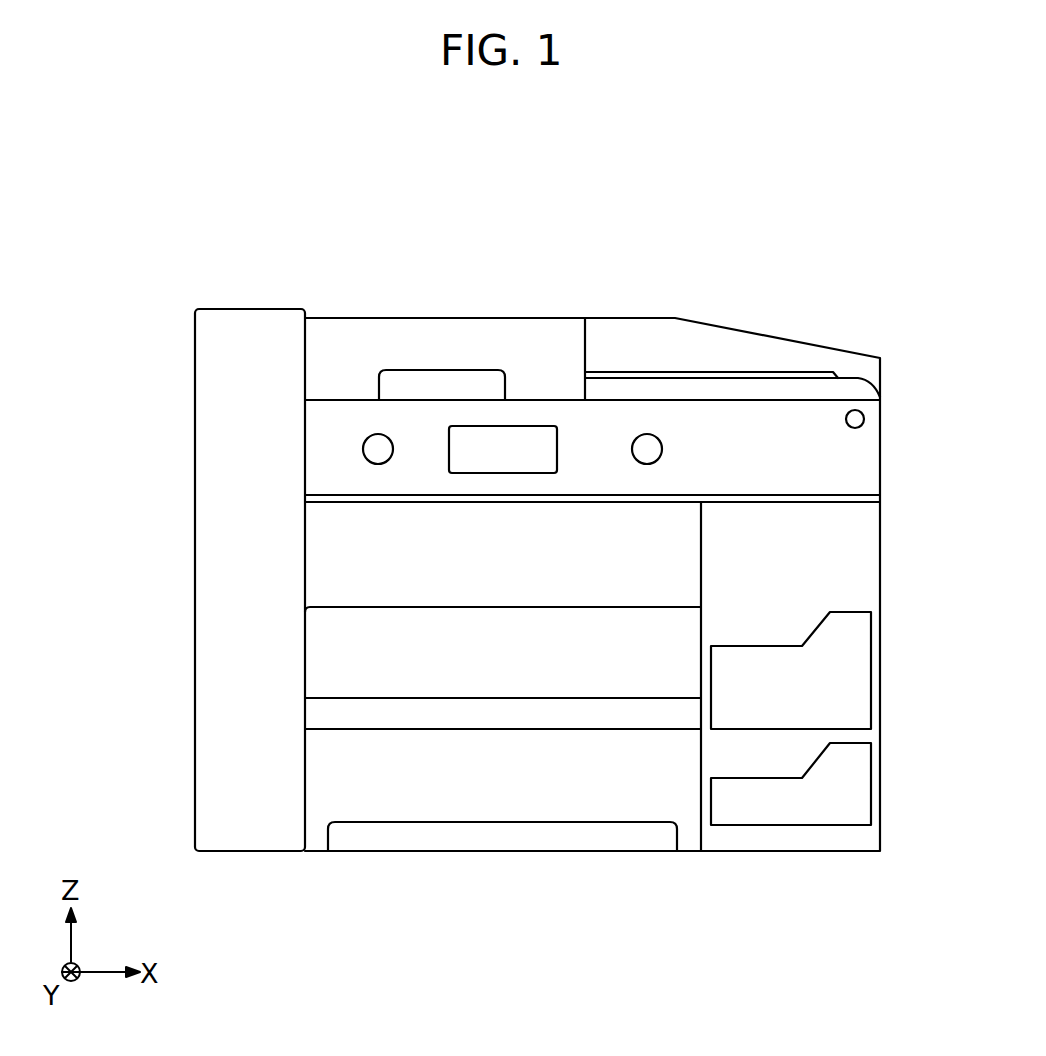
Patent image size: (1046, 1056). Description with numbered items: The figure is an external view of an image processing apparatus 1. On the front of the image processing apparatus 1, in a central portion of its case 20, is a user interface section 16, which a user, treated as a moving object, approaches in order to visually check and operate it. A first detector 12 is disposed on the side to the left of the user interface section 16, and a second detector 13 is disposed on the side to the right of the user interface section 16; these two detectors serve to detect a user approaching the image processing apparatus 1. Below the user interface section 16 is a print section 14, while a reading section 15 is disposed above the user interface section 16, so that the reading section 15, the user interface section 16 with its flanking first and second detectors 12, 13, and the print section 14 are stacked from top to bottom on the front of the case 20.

The image processing apparatus 1 is at (785, 231).
The first detector 12 is at (378, 451).
The second detector 13 is at (652, 449).
The print section 14 is at (338, 547).
The reading section 15 is at (380, 352).
The user interface section 16 is at (537, 438).
The case 20 is at (857, 486).